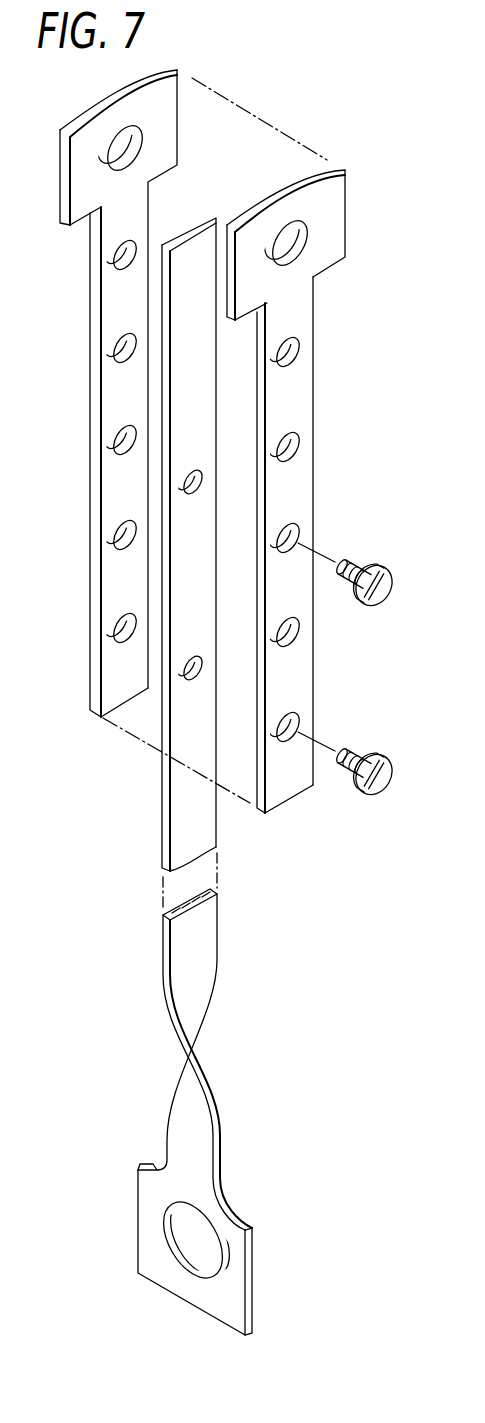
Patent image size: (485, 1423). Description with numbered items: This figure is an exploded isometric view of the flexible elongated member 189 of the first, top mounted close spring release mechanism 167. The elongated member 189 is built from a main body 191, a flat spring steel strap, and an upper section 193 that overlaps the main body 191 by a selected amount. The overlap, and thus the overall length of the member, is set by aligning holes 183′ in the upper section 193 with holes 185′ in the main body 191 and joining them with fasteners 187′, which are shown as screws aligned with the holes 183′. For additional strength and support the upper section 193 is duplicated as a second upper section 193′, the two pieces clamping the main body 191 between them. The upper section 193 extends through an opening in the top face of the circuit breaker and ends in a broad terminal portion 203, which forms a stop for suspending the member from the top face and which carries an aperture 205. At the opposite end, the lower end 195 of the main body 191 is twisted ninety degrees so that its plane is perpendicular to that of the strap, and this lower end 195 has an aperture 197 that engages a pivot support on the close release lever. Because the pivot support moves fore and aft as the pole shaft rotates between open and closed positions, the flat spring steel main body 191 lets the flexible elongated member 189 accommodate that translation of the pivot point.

The top mounted close spring release mechanism 167 is at (238, 174).
The duplicated upper section 193′ is at (118, 308).
The upper section 193 is at (303, 313).
The main body 191 is at (180, 810).
The broad terminal portion 203 is at (332, 250).
The aperture 205 is at (284, 233).
The holes 183′ is at (292, 532).
The holes 185′ is at (198, 494).
The fasteners 187′ is at (397, 567).
The flexible elongated member 189 is at (303, 877).
The lower end 195 is at (147, 1255).
The aperture 197 is at (193, 1219).